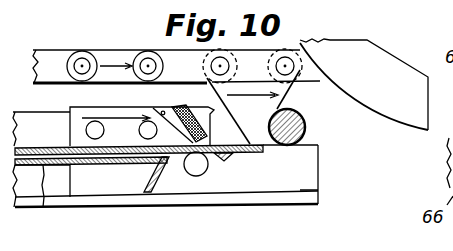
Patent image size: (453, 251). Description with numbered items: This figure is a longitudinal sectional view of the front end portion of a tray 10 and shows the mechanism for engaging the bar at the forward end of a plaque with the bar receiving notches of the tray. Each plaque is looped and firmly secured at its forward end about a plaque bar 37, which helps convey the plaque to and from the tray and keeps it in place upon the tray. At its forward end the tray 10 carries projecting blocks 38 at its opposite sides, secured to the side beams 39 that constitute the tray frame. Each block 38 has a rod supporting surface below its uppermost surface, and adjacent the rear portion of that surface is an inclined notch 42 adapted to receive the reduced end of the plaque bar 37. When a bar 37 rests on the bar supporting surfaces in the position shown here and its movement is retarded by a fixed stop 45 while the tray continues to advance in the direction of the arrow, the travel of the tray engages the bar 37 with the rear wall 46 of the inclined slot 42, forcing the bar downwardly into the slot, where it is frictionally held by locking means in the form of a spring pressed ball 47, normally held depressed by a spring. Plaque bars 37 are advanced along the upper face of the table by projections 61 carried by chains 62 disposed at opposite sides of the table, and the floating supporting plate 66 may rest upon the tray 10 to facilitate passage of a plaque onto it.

The tray 10 is at (43, 207).
The plaque bar 37 is at (306, 122).
The projecting block 38 is at (168, 191).
The side beam 39 is at (30, 120).
The inclined notch 42 is at (199, 166).
The fixed stop 45 is at (400, 66).
The rear wall 46 is at (196, 104).
The spring pressed ball 47 is at (222, 152).
The projection 61 is at (282, 108).
The chain 62 is at (54, 60).
The supporting plate 66 is at (123, 151).